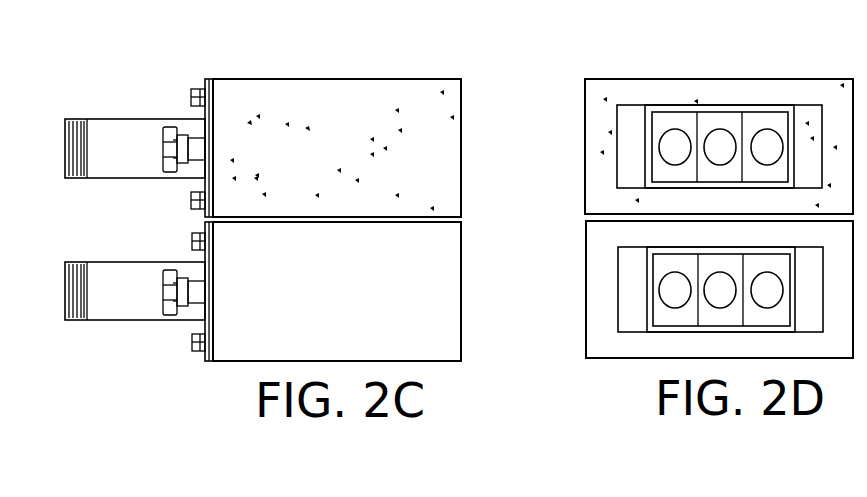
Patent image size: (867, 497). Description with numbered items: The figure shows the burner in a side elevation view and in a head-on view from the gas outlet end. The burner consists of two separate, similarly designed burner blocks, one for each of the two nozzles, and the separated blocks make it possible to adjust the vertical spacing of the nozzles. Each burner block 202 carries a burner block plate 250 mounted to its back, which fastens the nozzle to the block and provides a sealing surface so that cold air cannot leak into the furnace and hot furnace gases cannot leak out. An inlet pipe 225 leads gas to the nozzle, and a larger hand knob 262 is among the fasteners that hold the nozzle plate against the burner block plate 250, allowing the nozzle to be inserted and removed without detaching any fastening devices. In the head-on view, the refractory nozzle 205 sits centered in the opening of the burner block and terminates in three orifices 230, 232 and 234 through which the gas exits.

In FIG. 2C, the burner block 202 is at (445, 110).
In FIG. 2C, the inlet pipe 225 is at (117, 137).
In FIG. 2C, the burner block plate 250 is at (208, 82).
In FIG. 2C, the hand knob 262 is at (170, 167).
In FIG. 2D, the nozzle 205 is at (713, 172).
In FIG. 2D, the orifice 230 is at (768, 127).
In FIG. 2D, the orifice 232 is at (718, 127).
In FIG. 2D, the orifice 234 is at (670, 127).